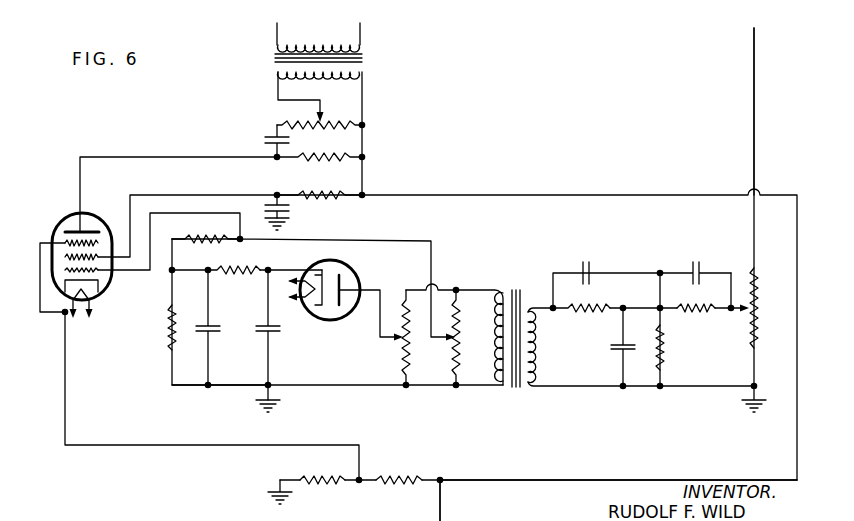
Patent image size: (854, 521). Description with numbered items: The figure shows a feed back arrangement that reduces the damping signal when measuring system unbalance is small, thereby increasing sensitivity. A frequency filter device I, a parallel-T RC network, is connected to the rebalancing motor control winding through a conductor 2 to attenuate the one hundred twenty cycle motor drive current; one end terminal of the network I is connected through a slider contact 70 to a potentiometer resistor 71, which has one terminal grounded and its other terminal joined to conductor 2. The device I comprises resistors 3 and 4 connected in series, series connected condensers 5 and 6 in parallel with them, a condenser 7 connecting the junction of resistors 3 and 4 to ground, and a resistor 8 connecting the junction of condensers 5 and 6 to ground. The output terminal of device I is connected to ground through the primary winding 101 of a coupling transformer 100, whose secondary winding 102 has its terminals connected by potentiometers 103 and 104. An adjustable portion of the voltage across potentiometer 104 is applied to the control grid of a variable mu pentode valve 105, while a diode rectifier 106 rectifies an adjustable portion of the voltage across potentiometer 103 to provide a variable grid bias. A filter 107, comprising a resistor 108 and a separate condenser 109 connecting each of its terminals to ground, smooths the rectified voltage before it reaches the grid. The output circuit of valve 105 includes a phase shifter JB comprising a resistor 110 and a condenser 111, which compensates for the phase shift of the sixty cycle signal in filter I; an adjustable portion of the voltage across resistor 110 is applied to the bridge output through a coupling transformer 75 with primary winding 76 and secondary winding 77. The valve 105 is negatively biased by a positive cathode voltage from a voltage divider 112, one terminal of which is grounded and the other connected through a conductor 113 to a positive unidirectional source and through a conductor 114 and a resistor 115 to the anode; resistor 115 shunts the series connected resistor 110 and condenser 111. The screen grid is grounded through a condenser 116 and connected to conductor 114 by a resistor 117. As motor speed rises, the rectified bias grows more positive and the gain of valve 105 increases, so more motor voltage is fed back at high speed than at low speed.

The secondary winding 77 is at (340, 41).
The coupling transformer 75 is at (362, 58).
The primary winding 76 is at (322, 76).
The phase shifter JB is at (261, 125).
The condenser 111 is at (262, 141).
The resistor 110 is at (310, 128).
The resistor 115 is at (312, 161).
The condenser 116 is at (265, 210).
The resistor 117 is at (320, 198).
The electron discharge pentode valve 105 is at (62, 218).
The resistor 108 is at (236, 266).
The condenser 109 is at (263, 328).
The filter 107 is at (222, 402).
The diode rectifier 106 is at (376, 258).
The potentiometer 103 is at (397, 364).
The potentiometer 104 is at (452, 342).
The secondary winding 102 is at (497, 342).
The coupling transformer 100 is at (516, 282).
The primary winding 101 is at (534, 368).
The condenser 6 is at (585, 258).
The resistor 4 is at (598, 313).
The condenser 7 is at (612, 349).
The frequency filter device I is at (673, 258).
The condenser 5 is at (697, 262).
The resistor 3 is at (704, 312).
The slider contact 70 is at (746, 316).
The potentiometer resistor 71 is at (762, 297).
The resistor 8 is at (667, 353).
The conductor 2 is at (756, 124).
The voltage divider 112 is at (383, 462).
The conductor 113 is at (442, 505).
The conductor 114 is at (612, 478).